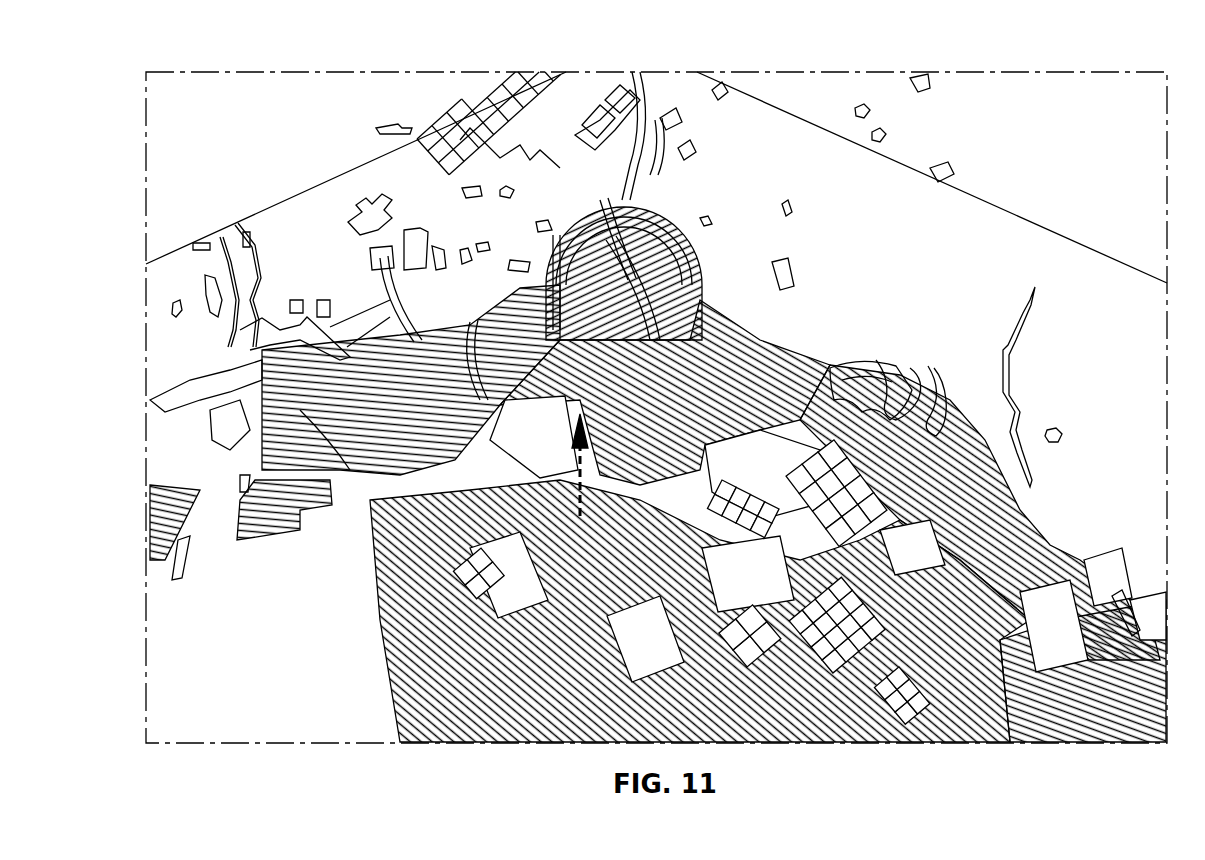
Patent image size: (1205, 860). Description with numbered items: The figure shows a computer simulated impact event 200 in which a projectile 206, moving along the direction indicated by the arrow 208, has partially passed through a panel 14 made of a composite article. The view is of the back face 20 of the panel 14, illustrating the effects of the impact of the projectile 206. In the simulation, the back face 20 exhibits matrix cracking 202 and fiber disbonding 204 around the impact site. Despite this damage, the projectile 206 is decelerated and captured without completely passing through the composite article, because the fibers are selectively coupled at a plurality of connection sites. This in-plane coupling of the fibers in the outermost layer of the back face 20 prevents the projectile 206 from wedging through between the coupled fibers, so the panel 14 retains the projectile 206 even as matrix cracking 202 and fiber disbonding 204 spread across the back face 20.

The computer simulated impact event 200 is at (1092, 72).
The panel 14 is at (1035, 224).
The back face 20 is at (907, 235).
The matrix cracking 202 is at (258, 276).
The fiber disbonding 204 is at (938, 436).
The projectile 206 is at (636, 240).
The arrow 208 is at (590, 462).